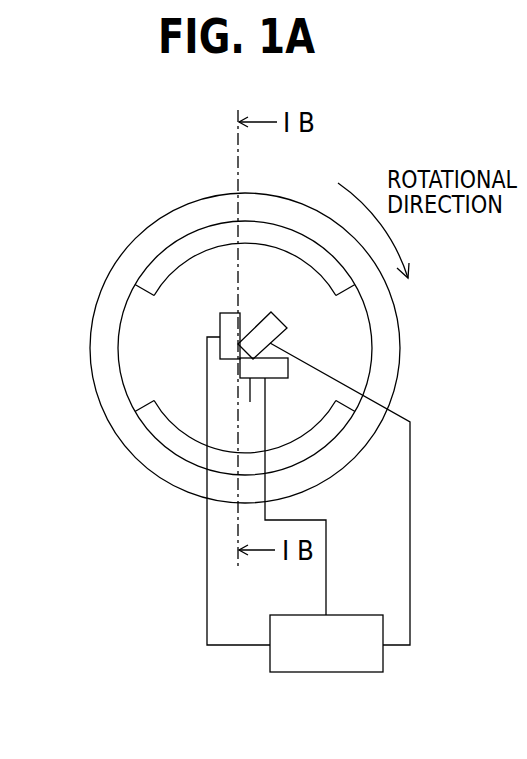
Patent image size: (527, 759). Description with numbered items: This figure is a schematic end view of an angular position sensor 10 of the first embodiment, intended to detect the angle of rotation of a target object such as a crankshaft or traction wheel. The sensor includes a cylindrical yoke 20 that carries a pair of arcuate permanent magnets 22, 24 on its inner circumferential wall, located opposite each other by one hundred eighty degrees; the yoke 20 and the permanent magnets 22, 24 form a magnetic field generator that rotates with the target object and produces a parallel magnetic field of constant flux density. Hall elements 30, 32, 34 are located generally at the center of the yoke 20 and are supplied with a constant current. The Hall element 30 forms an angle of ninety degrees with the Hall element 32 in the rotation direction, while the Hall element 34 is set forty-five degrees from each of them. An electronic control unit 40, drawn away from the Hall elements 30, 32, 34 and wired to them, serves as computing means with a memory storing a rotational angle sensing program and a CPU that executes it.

The angular position sensor 10 is at (202, 197).
The cylindrical yoke 20 is at (110, 403).
The permanent magnet 22 is at (163, 267).
The permanent magnet 24 is at (185, 447).
The Hall element 30 is at (220, 324).
The Hall element 32 is at (275, 368).
The Hall element 34 is at (278, 326).
The electronic control unit (ECU) 40 is at (335, 672).